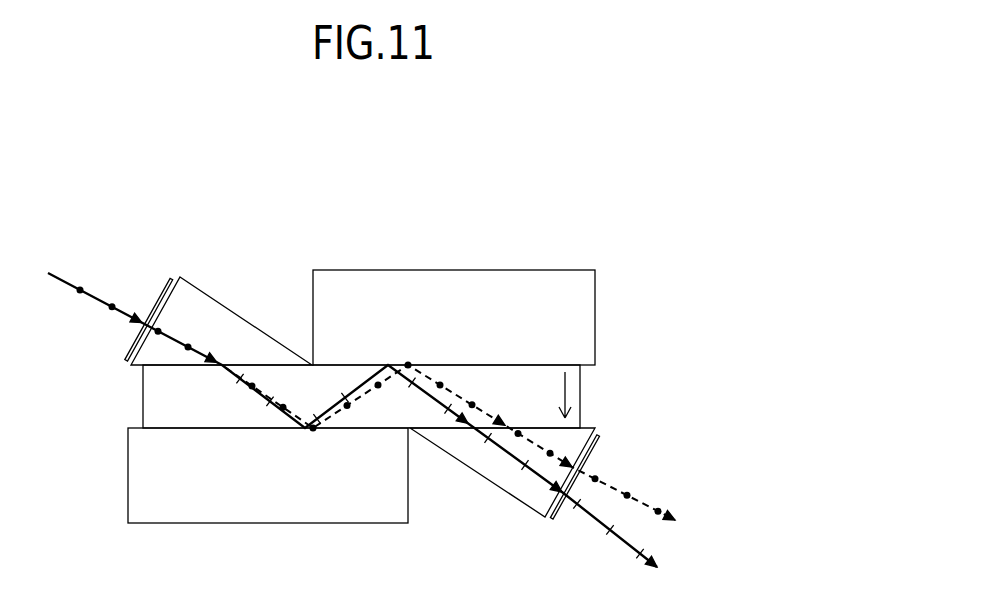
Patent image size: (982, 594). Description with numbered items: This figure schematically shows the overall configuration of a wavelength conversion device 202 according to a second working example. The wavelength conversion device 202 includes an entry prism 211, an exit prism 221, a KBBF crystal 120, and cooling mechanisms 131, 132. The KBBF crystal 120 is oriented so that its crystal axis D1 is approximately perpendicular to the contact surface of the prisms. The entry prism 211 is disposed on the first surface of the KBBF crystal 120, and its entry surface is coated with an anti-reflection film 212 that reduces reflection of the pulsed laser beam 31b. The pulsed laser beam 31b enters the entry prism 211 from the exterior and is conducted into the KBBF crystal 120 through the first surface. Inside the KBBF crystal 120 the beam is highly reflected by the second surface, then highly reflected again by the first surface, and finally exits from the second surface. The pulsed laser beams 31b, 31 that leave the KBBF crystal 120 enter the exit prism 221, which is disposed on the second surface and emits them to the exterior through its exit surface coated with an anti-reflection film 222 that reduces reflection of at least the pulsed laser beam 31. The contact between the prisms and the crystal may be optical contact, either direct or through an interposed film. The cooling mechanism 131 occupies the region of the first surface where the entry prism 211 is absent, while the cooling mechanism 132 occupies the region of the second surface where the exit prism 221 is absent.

The wavelength conversion device 202 is at (375, 174).
The cooling mechanism 131 is at (450, 270).
The cooling mechanism 132 is at (267, 523).
The KBBF crystal 120 is at (143, 400).
The entry prism 211 is at (203, 302).
The anti-reflection film 212 is at (160, 291).
The exit prism 221 is at (520, 492).
The anti-reflection film 222 is at (597, 445).
The crystal axis D1 is at (590, 402).
The pulsed laser beam 31 is at (627, 536).
The pulsed laser beam 31b is at (51, 278).